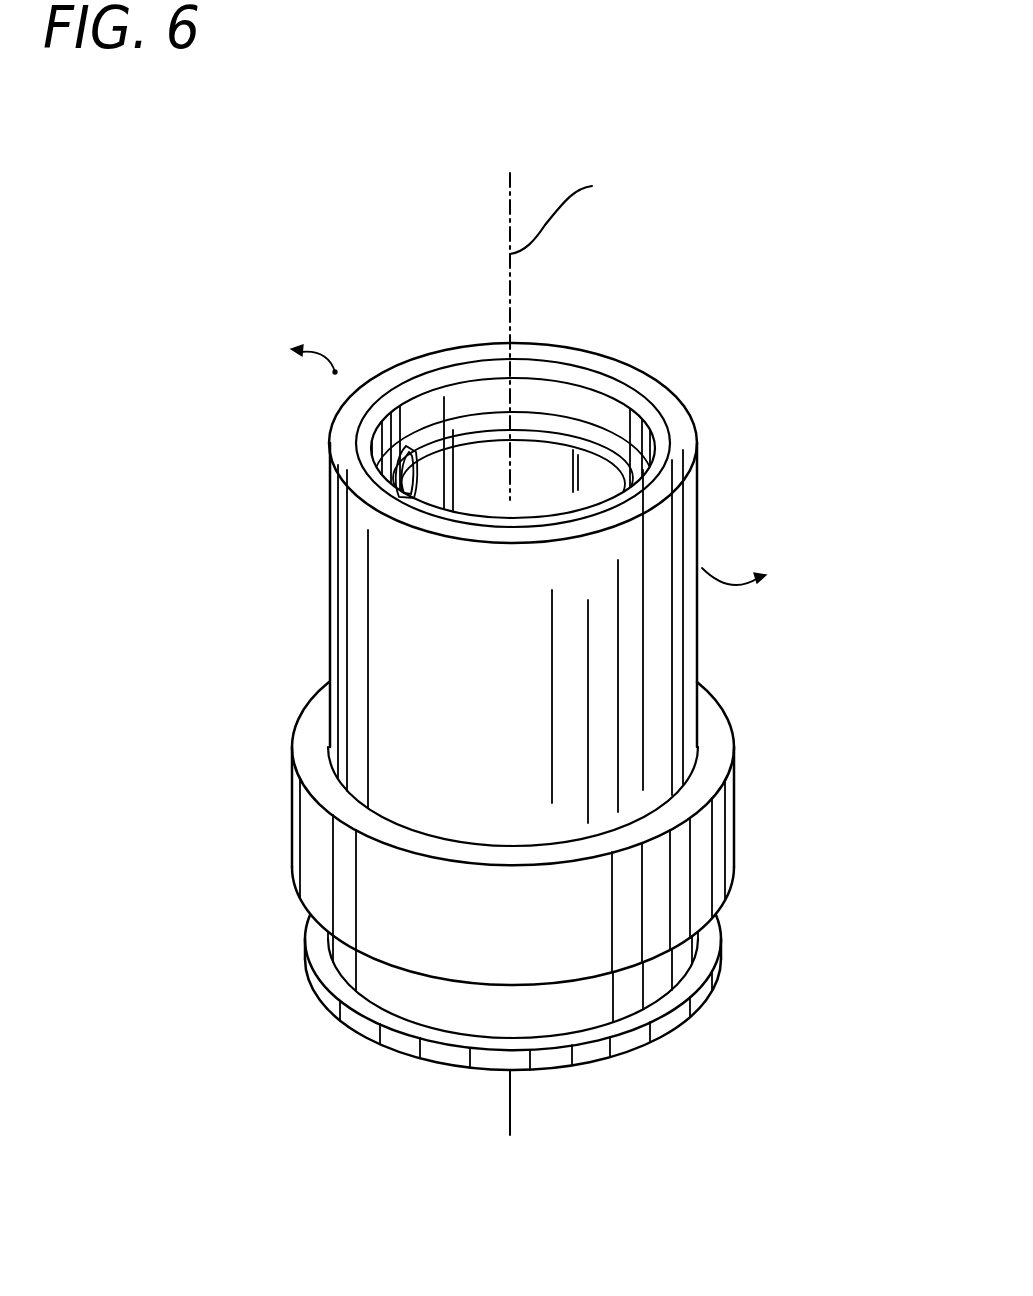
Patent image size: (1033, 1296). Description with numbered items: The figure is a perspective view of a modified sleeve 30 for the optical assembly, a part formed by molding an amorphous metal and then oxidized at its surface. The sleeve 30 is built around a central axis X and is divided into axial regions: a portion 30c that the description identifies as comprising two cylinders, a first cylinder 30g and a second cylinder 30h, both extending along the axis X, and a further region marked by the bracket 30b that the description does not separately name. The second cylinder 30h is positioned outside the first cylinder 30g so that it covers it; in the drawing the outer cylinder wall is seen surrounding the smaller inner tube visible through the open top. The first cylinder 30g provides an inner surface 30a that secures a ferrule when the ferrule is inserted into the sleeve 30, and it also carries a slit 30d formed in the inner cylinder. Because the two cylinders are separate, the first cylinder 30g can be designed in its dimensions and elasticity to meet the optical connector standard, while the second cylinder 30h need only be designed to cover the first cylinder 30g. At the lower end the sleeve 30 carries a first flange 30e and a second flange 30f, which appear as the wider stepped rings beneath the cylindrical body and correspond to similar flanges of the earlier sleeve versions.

The sleeve 30 is at (778, 356).
The inner surface 30a is at (568, 465).
The upper cylindrical portion 30b is at (843, 427).
The first portion 30c is at (843, 745).
The slit 30d is at (423, 448).
The first flange 30e is at (320, 1002).
The second flange 30f is at (320, 857).
The first cylinder 30g is at (540, 425).
The second cylinder 30h is at (677, 470).